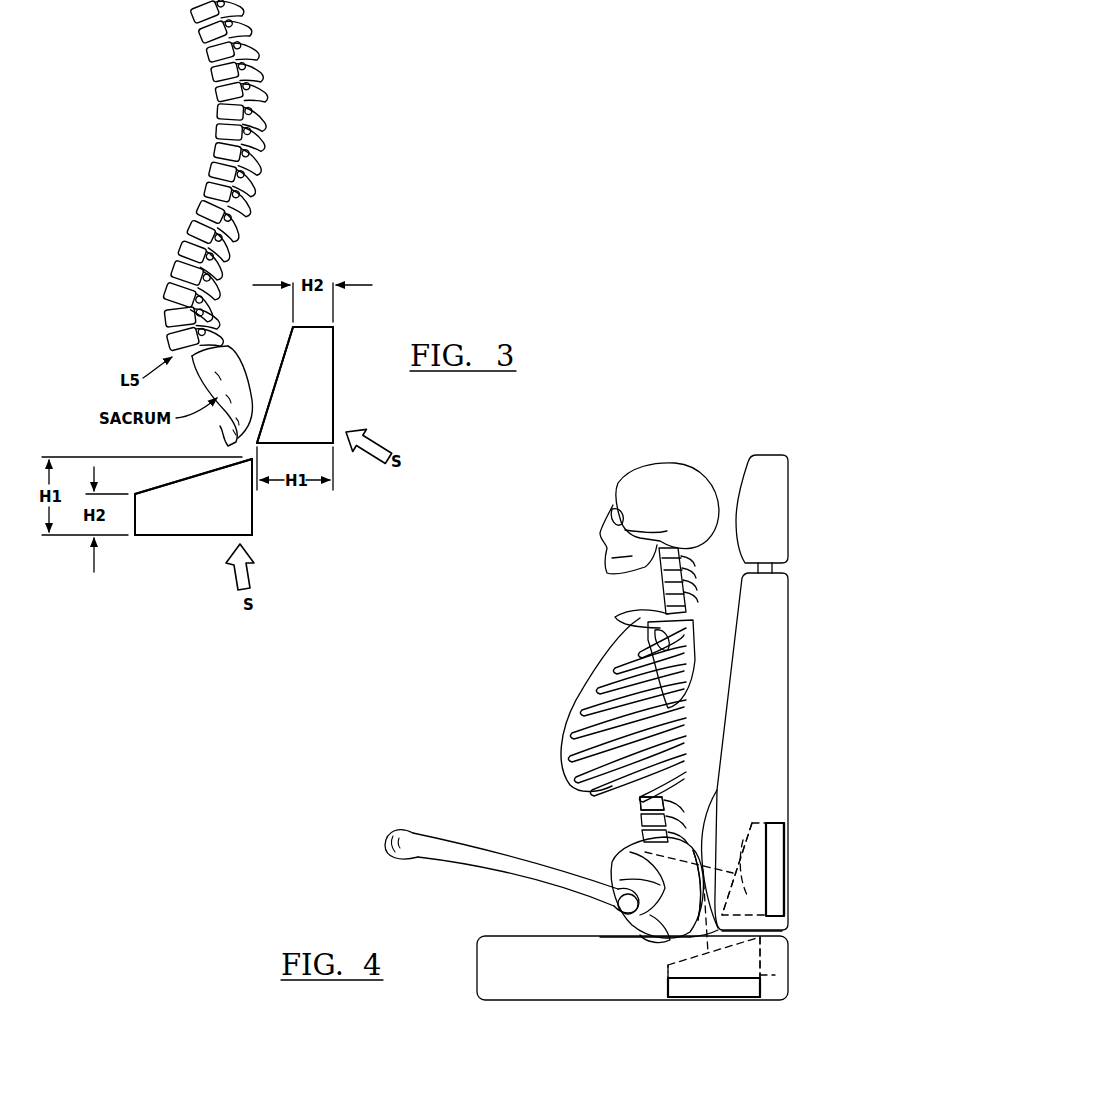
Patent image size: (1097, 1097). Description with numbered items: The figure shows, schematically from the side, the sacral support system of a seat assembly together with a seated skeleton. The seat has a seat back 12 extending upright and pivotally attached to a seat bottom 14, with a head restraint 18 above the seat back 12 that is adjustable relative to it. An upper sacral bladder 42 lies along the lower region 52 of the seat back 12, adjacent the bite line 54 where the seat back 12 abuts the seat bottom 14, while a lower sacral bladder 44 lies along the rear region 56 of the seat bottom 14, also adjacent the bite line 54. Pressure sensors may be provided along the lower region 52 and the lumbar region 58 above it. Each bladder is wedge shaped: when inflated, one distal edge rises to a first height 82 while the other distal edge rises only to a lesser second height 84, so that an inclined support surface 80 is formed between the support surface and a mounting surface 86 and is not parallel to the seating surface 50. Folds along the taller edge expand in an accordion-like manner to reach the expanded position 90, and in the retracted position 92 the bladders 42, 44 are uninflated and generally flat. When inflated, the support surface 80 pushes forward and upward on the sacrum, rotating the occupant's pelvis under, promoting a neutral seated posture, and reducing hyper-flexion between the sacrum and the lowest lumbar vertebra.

In FIG. 4, the seat back 12 is at (765, 648).
In FIG. 4, the seat bottom 14 is at (520, 990).
In FIG. 4, the head restraint 18 is at (765, 490).
In FIG. 3, the upper sacral bladder 42 is at (310, 393).
In FIG. 4, the upper sacral bladder 42 is at (747, 873).
In FIG. 3, the lower sacral bladder 44 is at (225, 519).
In FIG. 4, the lower sacral bladder 44 is at (727, 966).
In FIG. 4, the seating surface 50 is at (724, 682).
In FIG. 4, the lower region 52 is at (703, 867).
In FIG. 4, the bite line 54 is at (773, 931).
In FIG. 4, the rear region 56 is at (678, 944).
In FIG. 4, the lumbar region 58 is at (691, 850).
In FIG. 3, the inclined support surface 80 is at (278, 378).
In FIG. 4, the inclined support surface 80 is at (645, 852).
In FIG. 3, the first height 82 is at (305, 444).
In FIG. 4, the first height 82 is at (752, 822).
In FIG. 3, the second height 84 is at (308, 322).
In FIG. 4, the second height 84 is at (668, 965).
In FIG. 3, the mounting surface 86 is at (333, 370).
In FIG. 4, the mounting surface 86 is at (786, 865).
In FIG. 4, the expanded position 90 is at (743, 840).
In FIG. 4, the retracted position 92 is at (776, 843).